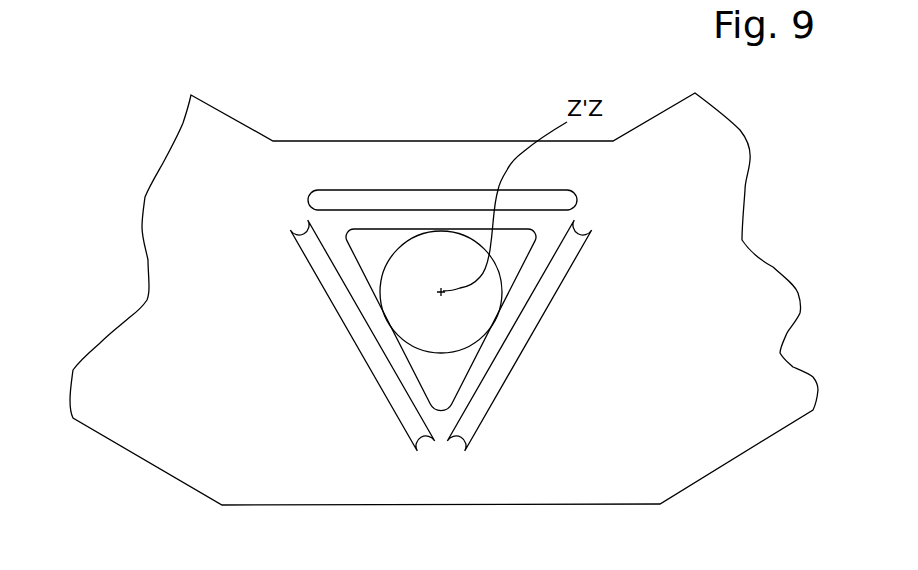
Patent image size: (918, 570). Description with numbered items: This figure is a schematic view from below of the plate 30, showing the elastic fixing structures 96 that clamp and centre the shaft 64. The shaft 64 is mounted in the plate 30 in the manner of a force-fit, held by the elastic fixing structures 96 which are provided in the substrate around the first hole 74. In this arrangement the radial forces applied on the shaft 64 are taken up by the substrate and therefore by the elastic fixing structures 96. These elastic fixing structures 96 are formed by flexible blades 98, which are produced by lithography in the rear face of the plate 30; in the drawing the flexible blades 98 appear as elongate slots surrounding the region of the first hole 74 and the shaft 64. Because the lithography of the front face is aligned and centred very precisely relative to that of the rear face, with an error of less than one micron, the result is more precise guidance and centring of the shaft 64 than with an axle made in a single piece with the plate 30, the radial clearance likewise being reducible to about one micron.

The plate 30 is at (760, 467).
The shaft 64 is at (437, 245).
The first hole 74 is at (422, 390).
The elastic fixing structures 96 is at (490, 165).
The flexible blades 98 is at (363, 222).